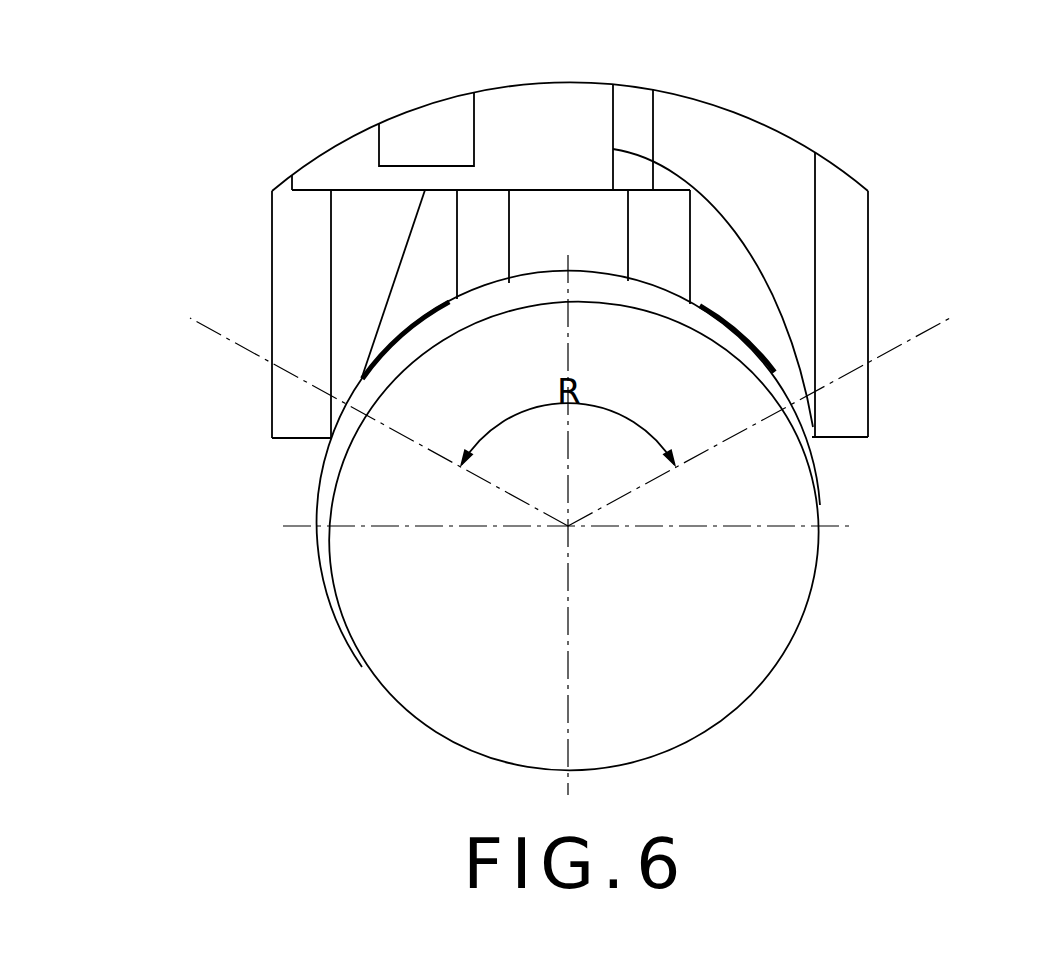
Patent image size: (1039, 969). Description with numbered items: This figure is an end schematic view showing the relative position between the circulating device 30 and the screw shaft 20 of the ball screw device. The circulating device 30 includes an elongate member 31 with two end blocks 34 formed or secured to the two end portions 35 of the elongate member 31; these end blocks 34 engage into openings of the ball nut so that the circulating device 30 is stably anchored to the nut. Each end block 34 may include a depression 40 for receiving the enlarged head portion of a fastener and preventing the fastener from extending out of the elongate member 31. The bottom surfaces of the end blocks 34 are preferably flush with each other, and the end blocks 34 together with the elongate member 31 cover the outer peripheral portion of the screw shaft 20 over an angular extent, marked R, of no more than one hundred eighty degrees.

The screw shaft 20 is at (758, 625).
The circulating device 30 is at (782, 150).
The elongate member 31 is at (570, 97).
The end blocks 34 is at (857, 317).
The end portions 35 is at (862, 223).
The depression 40 is at (430, 127).